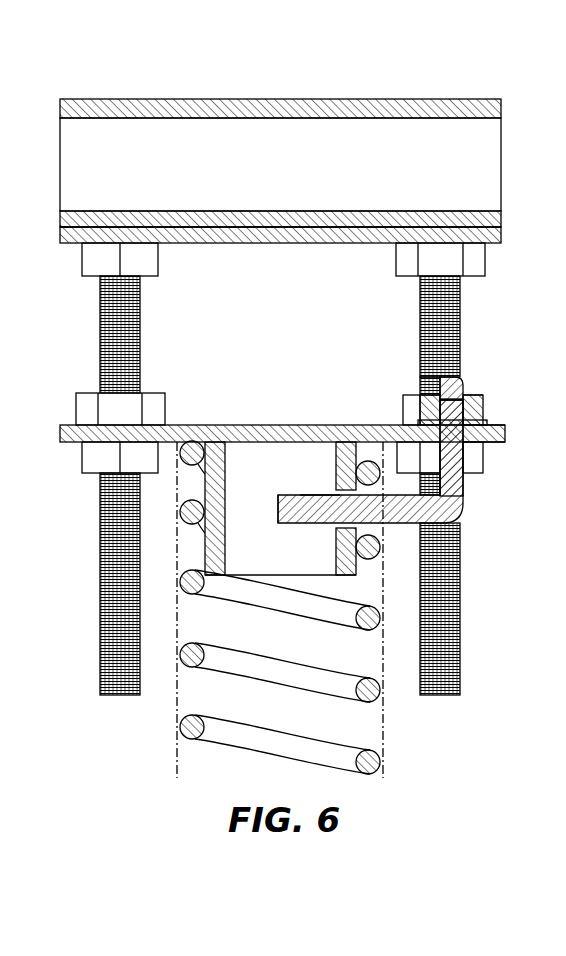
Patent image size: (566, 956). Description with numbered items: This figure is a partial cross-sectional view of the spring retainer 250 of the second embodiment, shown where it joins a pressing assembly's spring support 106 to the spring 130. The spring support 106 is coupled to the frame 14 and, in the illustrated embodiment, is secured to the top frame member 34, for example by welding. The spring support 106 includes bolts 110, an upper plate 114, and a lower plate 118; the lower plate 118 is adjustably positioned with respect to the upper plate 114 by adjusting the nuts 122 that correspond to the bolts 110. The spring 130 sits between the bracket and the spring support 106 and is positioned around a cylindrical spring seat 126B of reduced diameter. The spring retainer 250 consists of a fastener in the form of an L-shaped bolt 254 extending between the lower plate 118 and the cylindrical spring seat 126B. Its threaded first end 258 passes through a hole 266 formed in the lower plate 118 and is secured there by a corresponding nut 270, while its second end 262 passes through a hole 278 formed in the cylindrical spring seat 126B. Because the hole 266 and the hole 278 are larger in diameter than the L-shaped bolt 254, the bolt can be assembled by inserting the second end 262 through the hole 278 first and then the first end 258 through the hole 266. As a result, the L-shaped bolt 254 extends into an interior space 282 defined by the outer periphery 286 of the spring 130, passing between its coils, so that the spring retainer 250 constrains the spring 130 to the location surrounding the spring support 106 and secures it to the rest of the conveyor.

The frame 14 is at (280, 149).
The top frame member 34 is at (248, 103).
The upper plate 114 is at (277, 247).
The bolts 110 is at (104, 310).
The nuts 122 is at (83, 406).
The lower plate 118 is at (68, 442).
The spring support 106 is at (178, 541).
The cylindrical spring seat 126B is at (203, 547).
The spring 130 is at (277, 609).
The interior space 282 is at (305, 563).
The outer periphery 286 is at (386, 728).
The spring retainer 250 is at (395, 459).
The L-shaped bolt 254 is at (453, 500).
The first end 258 is at (460, 381).
The second end 262 is at (278, 504).
The hole 266 is at (495, 432).
The nut 270 is at (480, 399).
The hole 278 is at (330, 508).